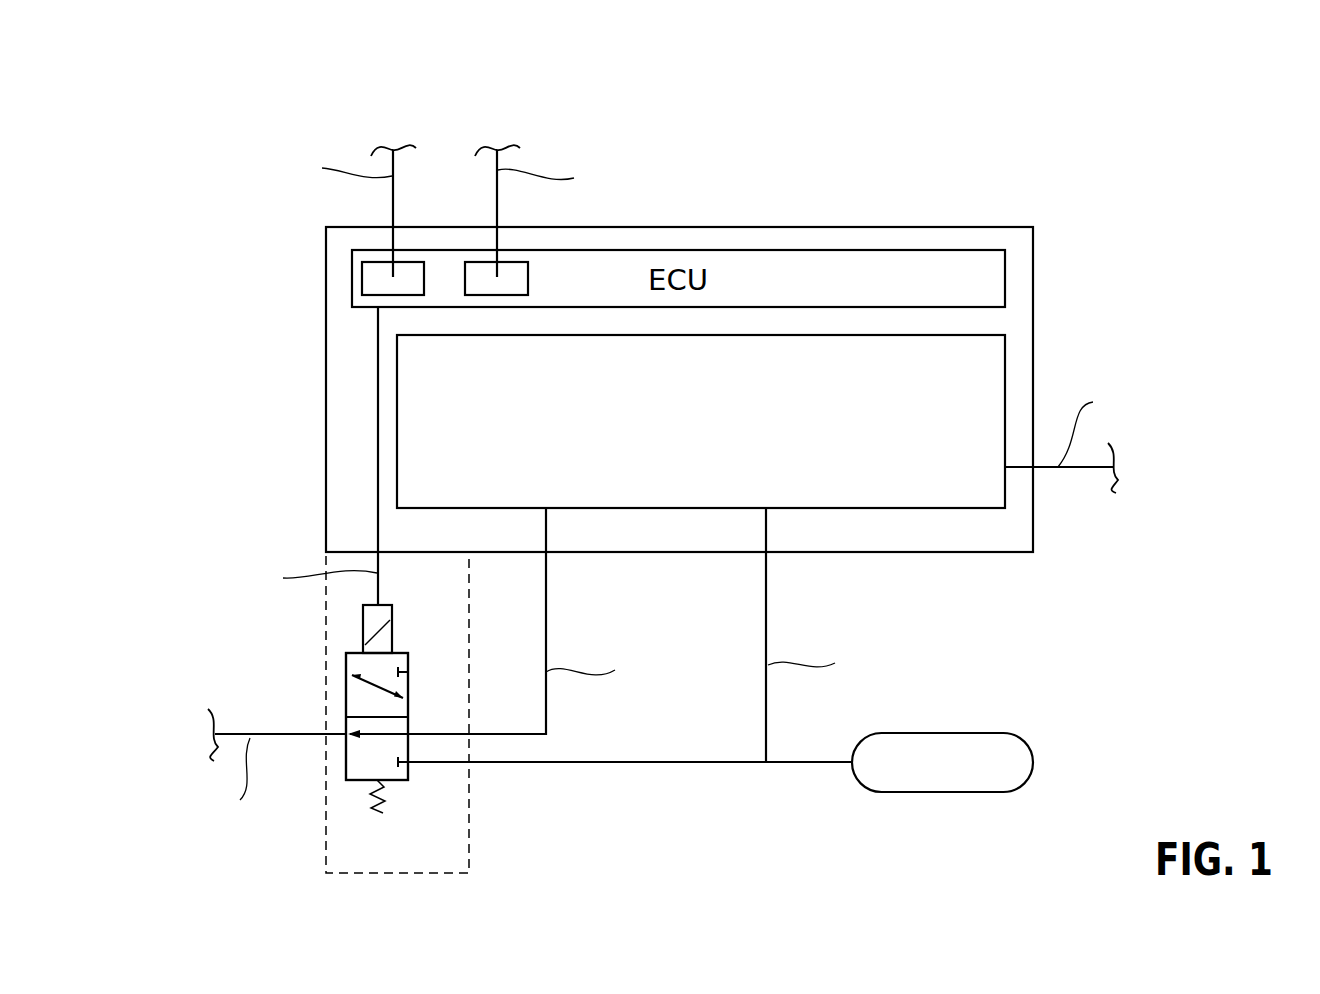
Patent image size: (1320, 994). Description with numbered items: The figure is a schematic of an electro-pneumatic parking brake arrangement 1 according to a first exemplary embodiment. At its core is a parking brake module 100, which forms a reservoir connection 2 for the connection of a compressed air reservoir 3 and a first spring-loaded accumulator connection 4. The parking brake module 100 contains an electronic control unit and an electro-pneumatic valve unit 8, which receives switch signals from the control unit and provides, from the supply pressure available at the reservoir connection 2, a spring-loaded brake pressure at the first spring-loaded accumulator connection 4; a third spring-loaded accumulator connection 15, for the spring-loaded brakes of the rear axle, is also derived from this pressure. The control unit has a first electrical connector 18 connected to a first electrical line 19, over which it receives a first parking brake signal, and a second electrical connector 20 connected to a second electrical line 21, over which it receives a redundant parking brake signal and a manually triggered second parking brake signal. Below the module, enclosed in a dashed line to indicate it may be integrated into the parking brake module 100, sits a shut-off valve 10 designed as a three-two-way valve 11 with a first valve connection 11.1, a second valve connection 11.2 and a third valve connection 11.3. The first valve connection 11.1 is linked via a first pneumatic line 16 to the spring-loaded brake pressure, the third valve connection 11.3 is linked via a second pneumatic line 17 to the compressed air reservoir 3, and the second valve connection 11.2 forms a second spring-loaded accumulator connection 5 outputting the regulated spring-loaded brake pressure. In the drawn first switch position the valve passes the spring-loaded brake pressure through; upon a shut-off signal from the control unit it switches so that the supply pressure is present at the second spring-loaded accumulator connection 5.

The electro-pneumatic parking brake arrangement 1 is at (200, 150).
The parking brake module 100 is at (770, 227).
The reservoir connection 2 is at (768, 556).
The compressed air reservoir 3 is at (937, 777).
The first spring-loaded accumulator connection 4 is at (1063, 468).
The second spring-loaded accumulator connection 5 is at (326, 733).
The electro-pneumatic valve unit 8 is at (1005, 365).
The shut-off valve 10 is at (358, 697).
The 3/2-way valve 11 is at (377, 716).
The first 3/2-way valve connection 11.1 is at (411, 733).
The second 3/2-way valve connection 11.2 is at (346, 738).
The third 3/2-way valve connection 11.3 is at (412, 766).
The third spring-loaded accumulator connection 15 is at (548, 556).
The first pneumatic line 16 is at (546, 712).
The second pneumatic line 17 is at (605, 765).
The first electrical connector 18 is at (520, 283).
The first electrical line 19 is at (498, 205).
The second electrical connector 20 is at (366, 283).
The second electrical line 21 is at (392, 207).